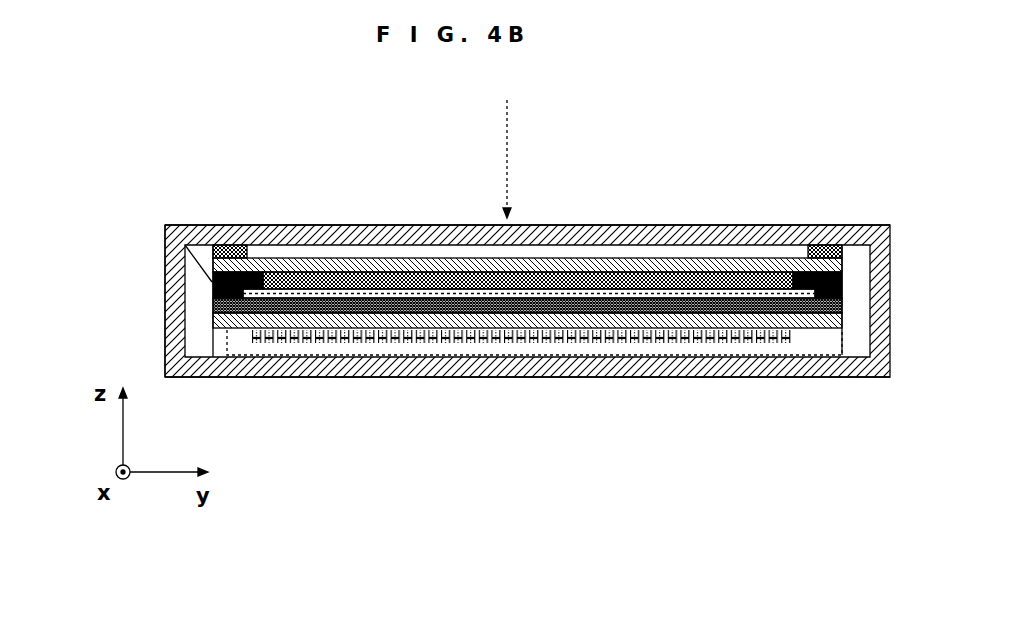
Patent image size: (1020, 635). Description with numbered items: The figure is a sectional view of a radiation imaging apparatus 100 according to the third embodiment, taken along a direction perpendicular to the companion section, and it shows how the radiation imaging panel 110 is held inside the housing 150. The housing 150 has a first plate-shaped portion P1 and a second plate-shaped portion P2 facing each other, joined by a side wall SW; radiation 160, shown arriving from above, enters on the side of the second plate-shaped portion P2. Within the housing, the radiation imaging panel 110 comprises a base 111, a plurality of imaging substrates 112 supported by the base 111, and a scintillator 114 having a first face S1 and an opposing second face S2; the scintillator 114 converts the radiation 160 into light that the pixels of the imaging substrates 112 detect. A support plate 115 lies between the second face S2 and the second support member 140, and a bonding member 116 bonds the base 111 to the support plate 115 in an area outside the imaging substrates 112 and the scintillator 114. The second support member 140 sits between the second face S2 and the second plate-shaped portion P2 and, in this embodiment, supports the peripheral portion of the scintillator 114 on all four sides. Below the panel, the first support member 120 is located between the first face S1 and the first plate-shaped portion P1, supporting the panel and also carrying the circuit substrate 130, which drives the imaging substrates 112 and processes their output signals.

The radiation imaging apparatus 100 is at (604, 437).
The radiation imaging panel 110 is at (527, 215).
The base 111 is at (664, 297).
The imaging substrates 112 is at (692, 292).
The scintillator 114 is at (730, 284).
The support plate 115 is at (622, 258).
The bonding member 116 is at (166, 229).
The first support member 120 is at (838, 350).
The circuit substrate 130 is at (522, 347).
The second support member 140 is at (217, 245).
The housing 150 is at (598, 258).
The radiation 160 is at (509, 135).
The first face S1 is at (447, 292).
The second face S2 is at (517, 270).
The first plate-shaped portion P1 is at (265, 377).
The second plate-shaped portion P2 is at (410, 225).
The side wall SW is at (166, 297).